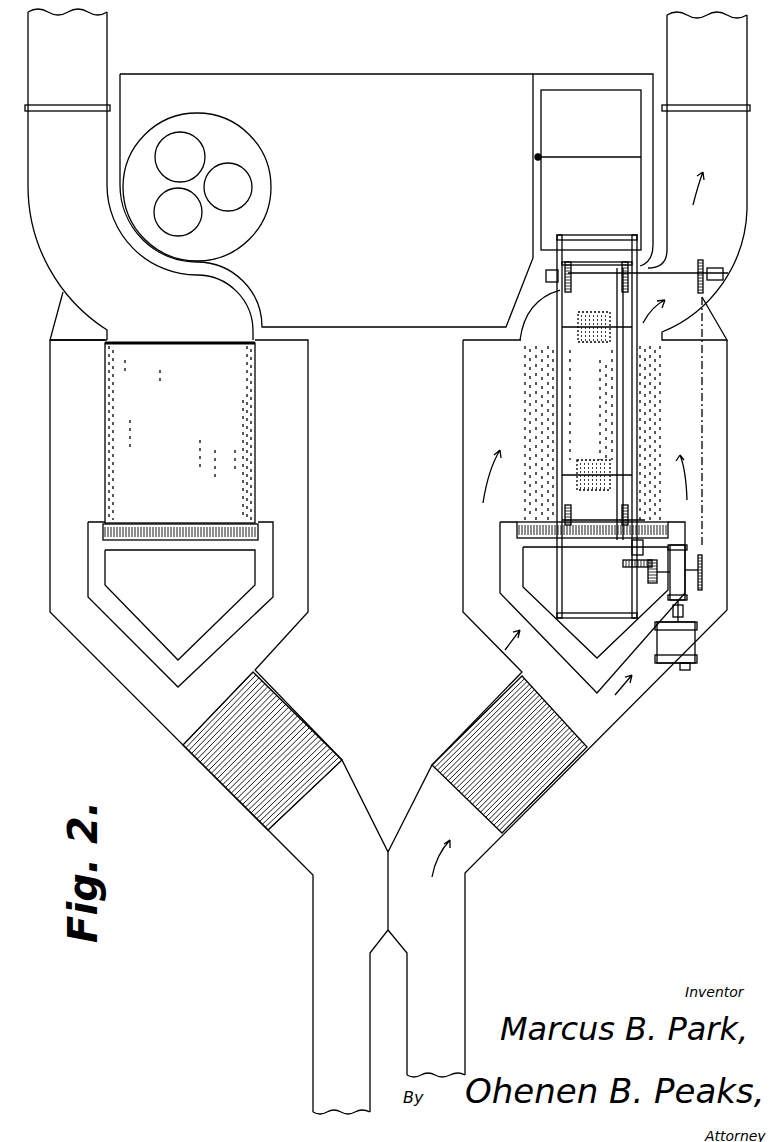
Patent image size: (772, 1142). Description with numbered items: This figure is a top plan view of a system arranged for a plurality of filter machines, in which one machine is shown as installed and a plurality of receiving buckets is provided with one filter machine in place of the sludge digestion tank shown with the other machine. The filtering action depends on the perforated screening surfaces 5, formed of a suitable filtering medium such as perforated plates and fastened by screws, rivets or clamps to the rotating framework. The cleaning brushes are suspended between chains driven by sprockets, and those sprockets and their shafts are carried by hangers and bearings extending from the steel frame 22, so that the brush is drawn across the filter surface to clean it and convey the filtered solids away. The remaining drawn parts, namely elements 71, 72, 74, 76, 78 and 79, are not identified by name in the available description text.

The perforated screening surfaces 5 is at (382, 433).
The steel frame 22 is at (558, 567).
The brush 71 is at (595, 312).
The drive shaft 72 is at (637, 268).
The grate 74 is at (105, 525).
The worm gear drive 76 is at (632, 547).
The guide bar 78 is at (617, 382).
The sprocket 79 is at (566, 292).